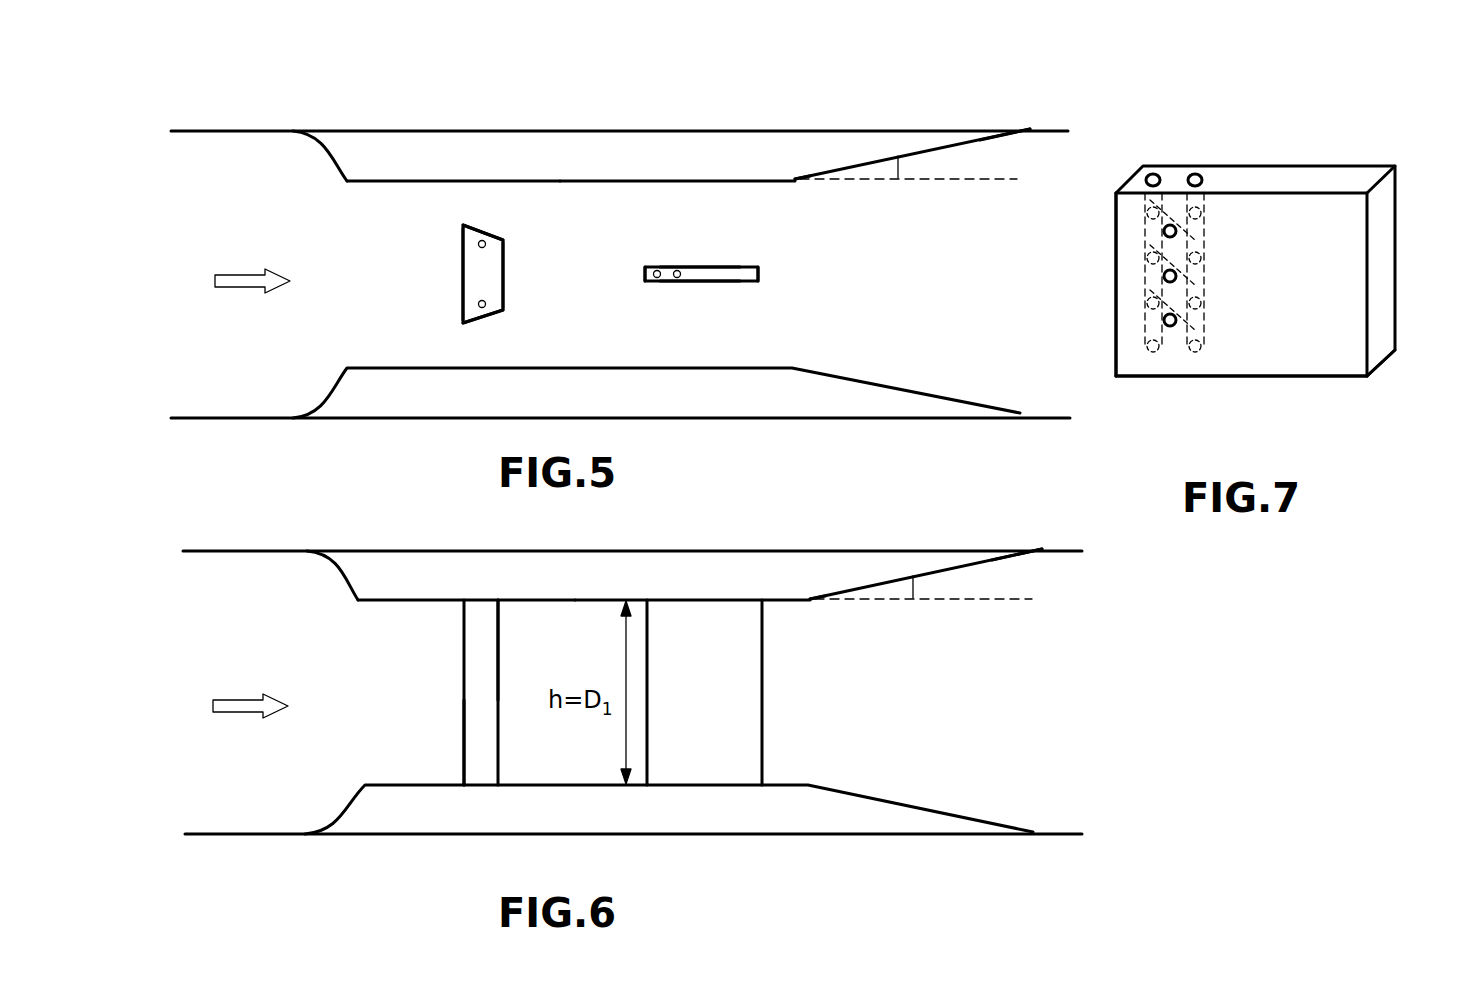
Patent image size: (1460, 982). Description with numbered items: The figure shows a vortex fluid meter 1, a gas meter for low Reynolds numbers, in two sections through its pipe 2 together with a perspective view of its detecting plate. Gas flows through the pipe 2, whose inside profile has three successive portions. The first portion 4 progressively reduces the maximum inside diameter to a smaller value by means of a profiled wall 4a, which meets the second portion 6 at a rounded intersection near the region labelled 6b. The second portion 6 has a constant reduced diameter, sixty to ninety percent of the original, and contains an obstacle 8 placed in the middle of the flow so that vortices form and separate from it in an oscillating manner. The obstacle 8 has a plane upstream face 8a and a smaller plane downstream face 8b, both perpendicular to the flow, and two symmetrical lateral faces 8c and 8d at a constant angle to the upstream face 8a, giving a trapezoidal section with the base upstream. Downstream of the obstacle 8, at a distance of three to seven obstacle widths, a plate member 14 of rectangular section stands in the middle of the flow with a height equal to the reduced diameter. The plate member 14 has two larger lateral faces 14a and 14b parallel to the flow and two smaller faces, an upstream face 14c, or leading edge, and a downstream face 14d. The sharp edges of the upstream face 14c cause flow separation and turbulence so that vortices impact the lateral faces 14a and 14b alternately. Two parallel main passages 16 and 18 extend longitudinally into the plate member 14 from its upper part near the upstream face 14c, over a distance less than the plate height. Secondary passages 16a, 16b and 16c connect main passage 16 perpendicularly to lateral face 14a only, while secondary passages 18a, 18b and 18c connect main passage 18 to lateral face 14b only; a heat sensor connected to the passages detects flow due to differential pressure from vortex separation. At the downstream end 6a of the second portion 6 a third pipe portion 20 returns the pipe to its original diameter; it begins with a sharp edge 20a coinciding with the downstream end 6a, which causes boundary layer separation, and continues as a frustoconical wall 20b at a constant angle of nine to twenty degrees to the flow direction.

In FIG. 5, the vortex fluid meter 1 is at (283, 114).
In FIG. 6, the vortex fluid meter 1 is at (295, 535).
In FIG. 5, the pipe 2 is at (509, 130).
In FIG. 6, the pipe 2 is at (524, 549).
In FIG. 5, the first portion 4 is at (326, 140).
In FIG. 6, the first portion 4 is at (342, 560).
In FIG. 5, the profiled wall 4a is at (320, 155).
In FIG. 6, the profiled wall 4a is at (335, 575).
In FIG. 5, the second portion 6 is at (560, 181).
In FIG. 6, the second portion 6 is at (575, 600).
In FIG. 5, the downstream end of the second pipe portion 6a is at (787, 180).
In FIG. 6, the downstream end of the second pipe portion 6a is at (802, 598).
In FIG. 5, the upstream wall portion 6b is at (342, 184).
In FIG. 6, the upstream wall portion 6b is at (355, 603).
In FIG. 5, the obstacle 8 is at (492, 265).
In FIG. 6, the obstacle 8 is at (500, 622).
In FIG. 5, the upstream face 8a is at (462, 266).
In FIG. 6, the upstream face 8a is at (463, 712).
In FIG. 5, the downstream face 8b is at (503, 274).
In FIG. 6, the downstream face 8b is at (499, 660).
In FIG. 5, the lateral face 8c is at (502, 238).
In FIG. 5, the lateral face 8d is at (503, 312).
In FIG. 5, the plate member 14 is at (745, 268).
In FIG. 6, the plate member 14 is at (713, 622).
In FIG. 7, the plate member 14 is at (1305, 135).
In FIG. 5, the lateral face 14a is at (700, 266).
In FIG. 5, the lateral face 14b is at (730, 283).
In FIG. 7, the lateral face 14b is at (1318, 362).
In FIG. 5, the upstream face 14c is at (645, 278).
In FIG. 7, the upstream face 14c is at (1115, 295).
In FIG. 5, the downstream face 14d is at (760, 273).
In FIG. 7, the downstream face 14d is at (1383, 346).
In FIG. 5, the main passage 16 is at (655, 270).
In FIG. 7, the main passage 16 is at (1152, 174).
In FIG. 7, the secondary passage 16a is at (1140, 206).
In FIG. 7, the secondary passage 16b is at (1145, 255).
In FIG. 7, the secondary passage 16c is at (1153, 308).
In FIG. 5, the main passage 18 is at (676, 270).
In FIG. 7, the main passage 18 is at (1193, 174).
In FIG. 7, the secondary passage 18a is at (1178, 232).
In FIG. 7, the secondary passage 18b is at (1178, 275).
In FIG. 7, the secondary passage 18c is at (1178, 321).
In FIG. 5, the third pipe portion 20 is at (918, 140).
In FIG. 6, the third pipe portion 20 is at (931, 560).
In FIG. 5, the sharp edge 20a is at (797, 182).
In FIG. 6, the sharp edge 20a is at (811, 601).
In FIG. 5, the frustoconical wall 20b is at (985, 140).
In FIG. 6, the frustoconical wall 20b is at (997, 560).